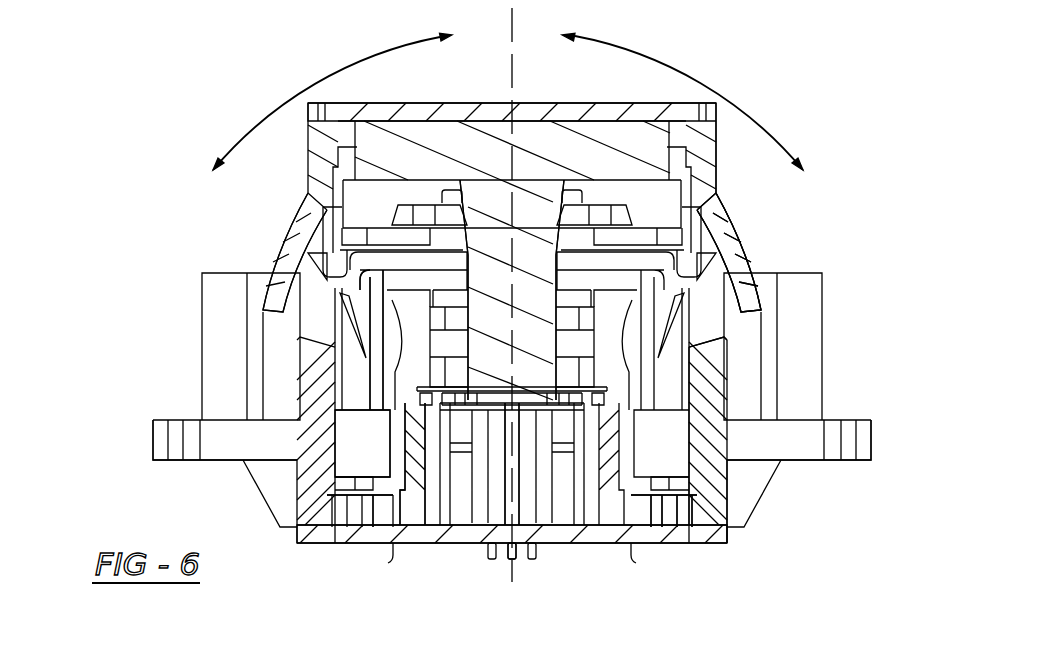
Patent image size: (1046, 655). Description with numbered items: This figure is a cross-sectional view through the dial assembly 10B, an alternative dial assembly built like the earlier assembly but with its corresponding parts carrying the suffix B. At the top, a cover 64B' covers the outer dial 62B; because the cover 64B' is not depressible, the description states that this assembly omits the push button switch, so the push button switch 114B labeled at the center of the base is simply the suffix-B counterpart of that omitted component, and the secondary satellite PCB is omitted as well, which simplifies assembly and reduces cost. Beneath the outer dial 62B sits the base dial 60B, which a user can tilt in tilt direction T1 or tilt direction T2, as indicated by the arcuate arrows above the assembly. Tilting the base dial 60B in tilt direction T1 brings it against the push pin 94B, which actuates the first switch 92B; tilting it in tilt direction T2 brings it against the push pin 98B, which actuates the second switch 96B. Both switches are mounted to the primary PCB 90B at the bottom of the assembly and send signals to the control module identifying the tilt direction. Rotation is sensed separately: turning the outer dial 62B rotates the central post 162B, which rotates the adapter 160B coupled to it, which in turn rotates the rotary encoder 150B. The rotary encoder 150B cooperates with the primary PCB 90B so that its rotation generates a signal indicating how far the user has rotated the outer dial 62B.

The dial assembly 10B is at (194, 102).
The tilt direction T1 is at (332, 101).
The tilt direction T2 is at (682, 101).
The cover 64B' is at (512, 118).
The post 162B is at (490, 253).
The base dial 60B is at (363, 362).
The outer dial 62B is at (740, 260).
The adapter 160B is at (410, 385).
The push pin 94B is at (357, 397).
The push pin 98B is at (668, 408).
The first switch 92B is at (348, 508).
The rotary encoder 150B is at (418, 508).
The push button switch 114B is at (503, 397).
The primary PCB 90B is at (653, 540).
The second switch 96B is at (683, 512).